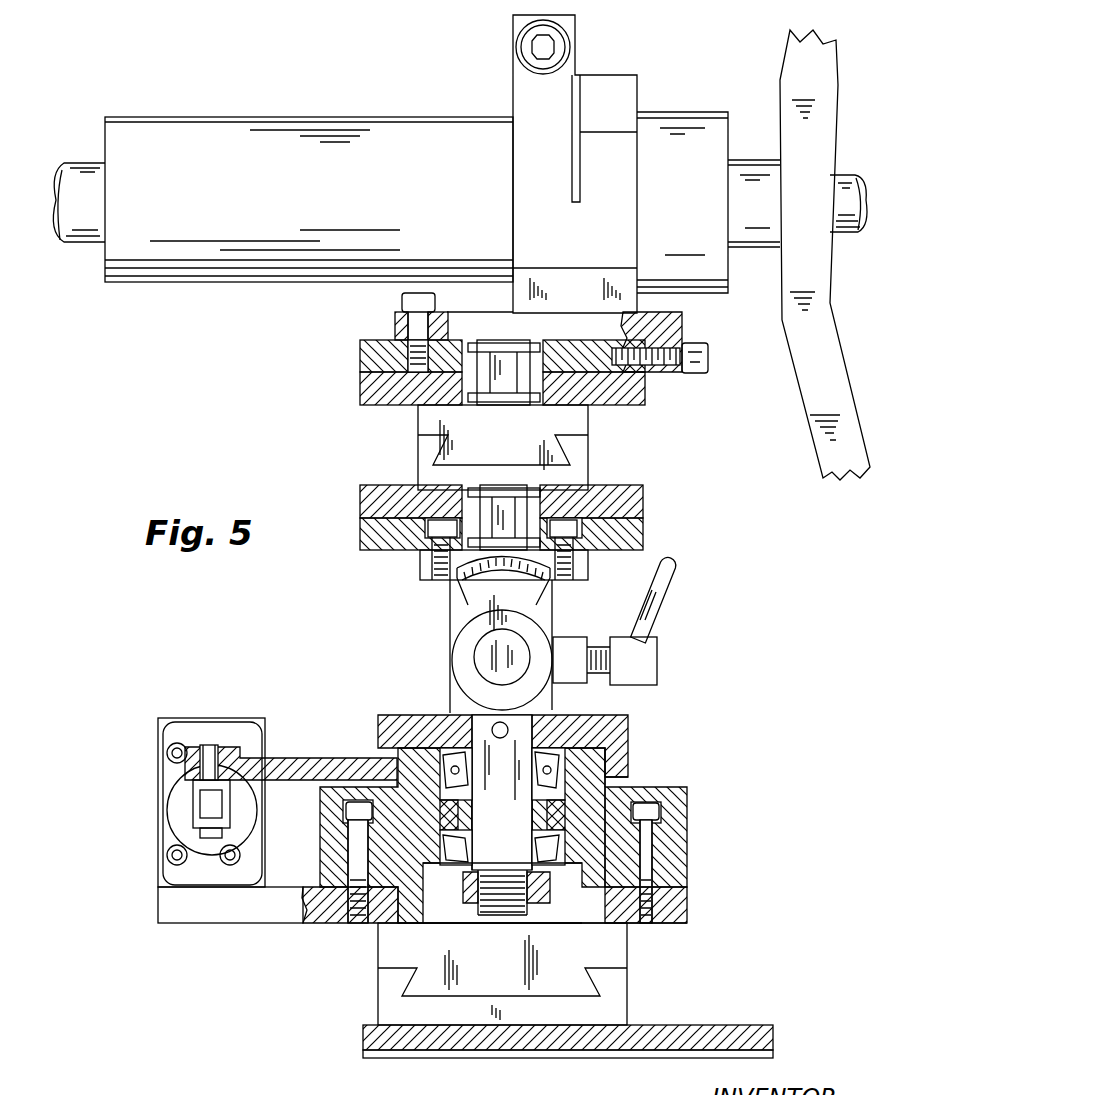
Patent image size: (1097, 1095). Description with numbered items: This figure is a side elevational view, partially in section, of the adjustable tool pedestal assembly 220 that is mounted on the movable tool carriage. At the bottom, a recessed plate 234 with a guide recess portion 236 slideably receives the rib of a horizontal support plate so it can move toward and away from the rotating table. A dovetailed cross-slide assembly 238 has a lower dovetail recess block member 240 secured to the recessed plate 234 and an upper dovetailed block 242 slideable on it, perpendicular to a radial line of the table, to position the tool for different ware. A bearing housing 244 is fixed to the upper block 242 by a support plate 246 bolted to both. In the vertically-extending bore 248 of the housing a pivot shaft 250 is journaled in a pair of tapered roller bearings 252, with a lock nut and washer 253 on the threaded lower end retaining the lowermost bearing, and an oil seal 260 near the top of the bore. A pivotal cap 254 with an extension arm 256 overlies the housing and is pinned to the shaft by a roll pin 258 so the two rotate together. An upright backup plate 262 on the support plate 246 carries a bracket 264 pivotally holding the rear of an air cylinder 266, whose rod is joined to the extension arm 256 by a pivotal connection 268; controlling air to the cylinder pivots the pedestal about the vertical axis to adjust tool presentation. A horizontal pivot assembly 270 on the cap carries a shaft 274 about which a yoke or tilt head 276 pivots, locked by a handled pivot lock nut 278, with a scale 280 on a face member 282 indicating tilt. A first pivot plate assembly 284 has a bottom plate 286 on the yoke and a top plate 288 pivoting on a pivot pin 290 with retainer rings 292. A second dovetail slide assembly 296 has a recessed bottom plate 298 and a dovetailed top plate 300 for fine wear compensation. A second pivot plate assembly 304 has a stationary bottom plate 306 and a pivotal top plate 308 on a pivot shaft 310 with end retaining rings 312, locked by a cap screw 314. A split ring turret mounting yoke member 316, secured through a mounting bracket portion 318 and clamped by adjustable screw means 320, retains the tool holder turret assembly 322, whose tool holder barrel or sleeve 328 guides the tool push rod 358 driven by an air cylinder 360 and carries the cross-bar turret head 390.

The adjustable tool pedestal assembly 220 is at (418, 815).
The recessed plate 234 is at (363, 1038).
The guide recess portion 236 is at (363, 1056).
The dovetailed cross-slide assembly 238 is at (507, 974).
The lower dovetail recess block member 240 is at (378, 993).
The upper dovetailed block 242 is at (378, 950).
The bearing housing 244 is at (690, 810).
The support plate 246 is at (172, 905).
The vertically-extending bore 248 is at (560, 795).
The pivot shaft 250 is at (538, 816).
The tapered roller bearings 252 is at (565, 834).
The lock nut and washer 253 is at (468, 903).
The pivotal cap 254 is at (628, 718).
The extension arm 256 is at (335, 758).
The roll pin 258 is at (492, 723).
The oil seal 260 is at (615, 757).
The upright backup plate 262 is at (169, 791).
The bracket 264 is at (165, 838).
The air cylinder 266 is at (195, 815).
The pivotal connection 268 is at (205, 800).
The horizontal pivot assembly 270 is at (507, 635).
The shaft 274 is at (488, 655).
The yoke or tilt head 276 is at (555, 614).
The handled pivot lock nut 278 is at (658, 668).
The scale 280 is at (575, 568).
The face member 282 is at (470, 590).
The first pivot plate assembly 284 is at (509, 518).
The bottom plate 286 is at (360, 540).
The top plate 288 is at (360, 500).
The pivot pin 290 is at (505, 500).
The retainer rings 292 is at (528, 502).
The second dovetail slide assembly 296 is at (501, 447).
The recessed bottom plate 298 is at (418, 460).
The dovetailed top plate 300 is at (418, 428).
The second pivot plate assembly 304 is at (502, 375).
The stationary bottom plate 306 is at (645, 398).
The pivotal top plate 308 is at (360, 350).
The pivot shaft 310 is at (516, 338).
The end retaining rings 312 is at (528, 350).
The cap screw 314 is at (398, 300).
The split ring turret mounting yoke member 316 is at (523, 150).
The mounting bracket portion 318 is at (684, 330).
The adjustable screw means 320 is at (560, 48).
The tool holder turret assembly 322 is at (362, 117).
The tool holder barrel or sleeve 328 is at (758, 160).
The tool push rod 358 is at (850, 175).
The air cylinder 360 is at (88, 148).
The cross-bar turret head 390 is at (822, 118).